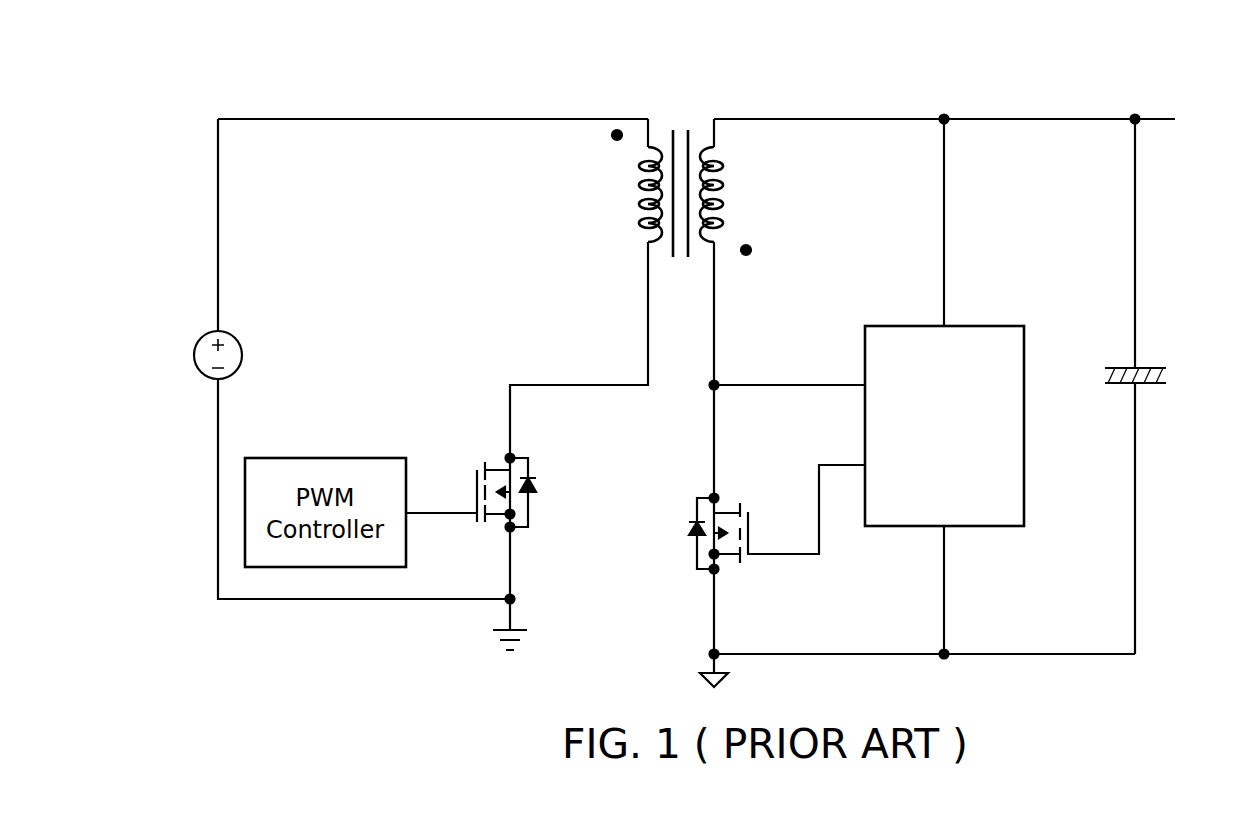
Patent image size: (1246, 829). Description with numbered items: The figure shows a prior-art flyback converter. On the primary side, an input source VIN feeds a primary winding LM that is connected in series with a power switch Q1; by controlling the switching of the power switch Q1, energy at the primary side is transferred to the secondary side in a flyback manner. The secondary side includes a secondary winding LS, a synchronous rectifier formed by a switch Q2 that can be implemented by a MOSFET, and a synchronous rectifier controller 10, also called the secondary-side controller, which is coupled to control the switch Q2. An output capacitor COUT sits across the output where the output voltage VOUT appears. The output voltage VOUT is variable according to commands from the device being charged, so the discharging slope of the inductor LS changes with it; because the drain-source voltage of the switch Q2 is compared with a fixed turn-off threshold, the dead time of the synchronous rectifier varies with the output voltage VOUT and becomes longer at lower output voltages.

The synchronous rectifier controller 10 is at (982, 323).
The input voltage source VIN is at (207, 333).
The primary winding LM is at (640, 188).
The secondary winding LS is at (724, 188).
The power switch Q1 is at (500, 460).
The switch Q2 is at (690, 505).
The output voltage VOUT is at (1134, 115).
The output capacitor COUT is at (1151, 365).